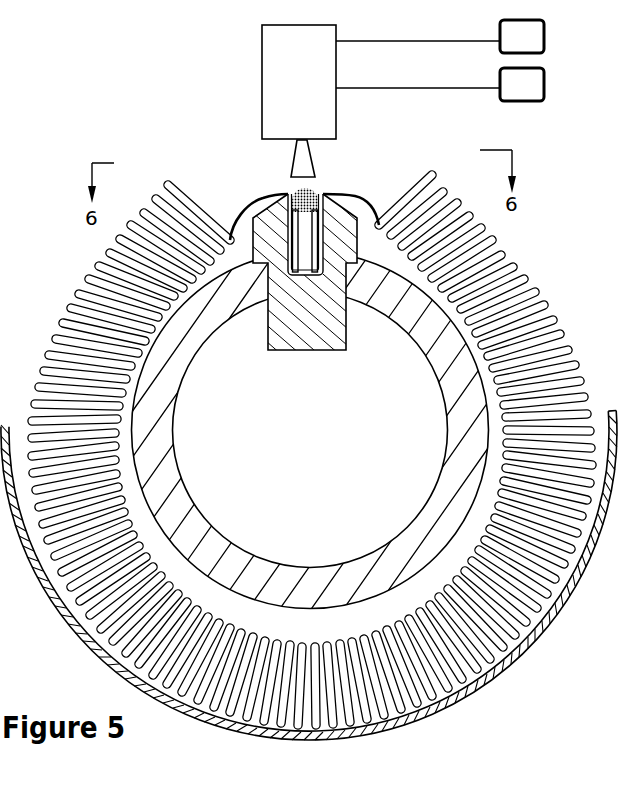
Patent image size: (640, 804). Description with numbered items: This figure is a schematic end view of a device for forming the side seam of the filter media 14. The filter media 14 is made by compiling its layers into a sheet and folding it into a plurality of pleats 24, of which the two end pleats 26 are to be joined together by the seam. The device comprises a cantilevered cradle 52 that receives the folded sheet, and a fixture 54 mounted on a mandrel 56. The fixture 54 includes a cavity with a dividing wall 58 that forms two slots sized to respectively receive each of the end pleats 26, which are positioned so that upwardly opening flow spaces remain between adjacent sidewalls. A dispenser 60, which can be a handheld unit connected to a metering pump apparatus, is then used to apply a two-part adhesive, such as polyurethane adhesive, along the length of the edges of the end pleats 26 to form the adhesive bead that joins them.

The filter media 14 is at (532, 313).
The pleats 24 is at (7, 128).
The end pleats 26 is at (280, 218).
The cantilevered cradle 52 is at (573, 588).
The fixture 54 is at (306, 237).
The mandrel 56 is at (407, 310).
The dividing wall 58 is at (300, 236).
The dispenser 60 is at (290, 73).